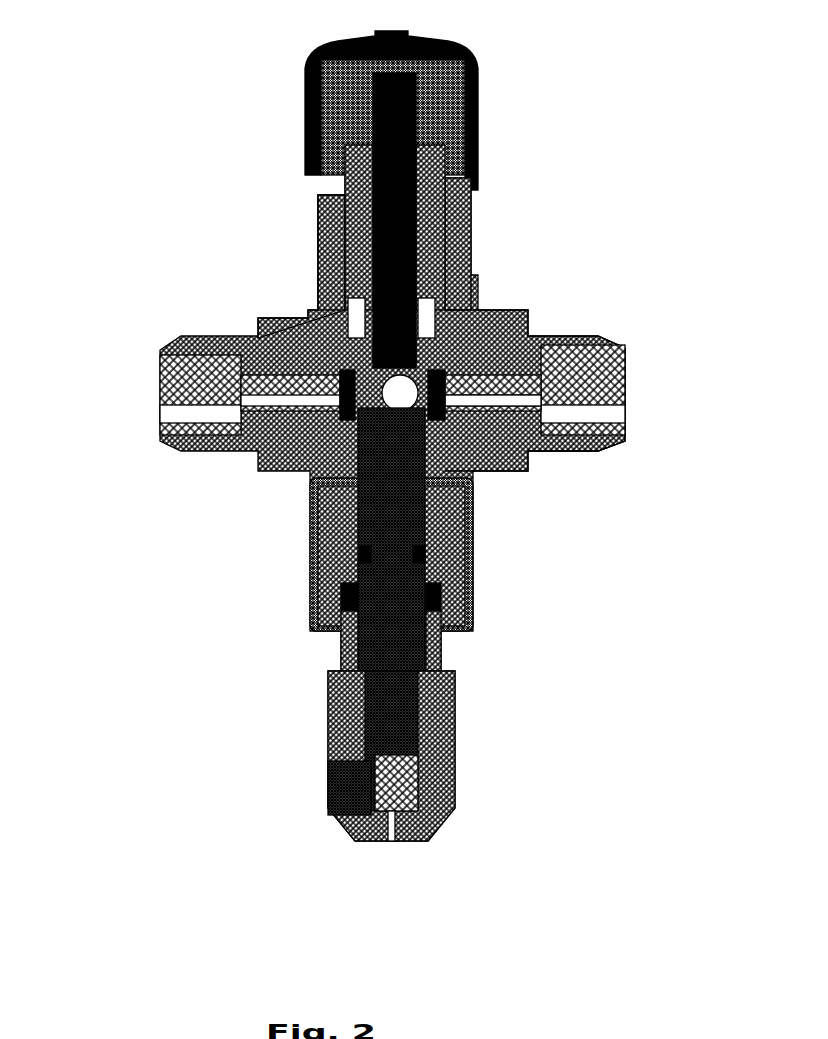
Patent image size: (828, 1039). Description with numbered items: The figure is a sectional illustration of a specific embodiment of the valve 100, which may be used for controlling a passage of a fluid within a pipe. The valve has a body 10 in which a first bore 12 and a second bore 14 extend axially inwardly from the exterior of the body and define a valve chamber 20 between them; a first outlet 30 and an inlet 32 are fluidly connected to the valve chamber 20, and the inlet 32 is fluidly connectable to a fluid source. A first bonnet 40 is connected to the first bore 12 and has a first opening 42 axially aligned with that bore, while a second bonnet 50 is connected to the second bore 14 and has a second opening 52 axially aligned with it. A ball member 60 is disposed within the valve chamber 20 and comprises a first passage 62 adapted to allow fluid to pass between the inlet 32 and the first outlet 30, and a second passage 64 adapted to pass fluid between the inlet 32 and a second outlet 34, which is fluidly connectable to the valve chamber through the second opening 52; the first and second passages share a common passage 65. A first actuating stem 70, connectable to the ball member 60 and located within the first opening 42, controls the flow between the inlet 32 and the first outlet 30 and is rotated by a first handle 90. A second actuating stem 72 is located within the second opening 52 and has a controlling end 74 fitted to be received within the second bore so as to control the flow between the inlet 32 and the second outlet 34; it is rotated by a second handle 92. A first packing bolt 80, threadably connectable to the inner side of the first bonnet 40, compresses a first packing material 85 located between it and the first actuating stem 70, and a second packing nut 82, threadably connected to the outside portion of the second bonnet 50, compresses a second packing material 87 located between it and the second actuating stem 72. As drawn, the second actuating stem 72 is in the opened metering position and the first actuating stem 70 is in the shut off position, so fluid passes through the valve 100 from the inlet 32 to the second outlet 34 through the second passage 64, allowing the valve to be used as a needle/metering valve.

The valve 100 is at (197, 112).
The first handle 90 is at (470, 62).
The first actuating stem 70 is at (400, 152).
The first packing bolt 80 is at (432, 208).
The first bonnet 40 is at (452, 234).
The first opening 42 is at (437, 287).
The first packing material 85 is at (313, 282).
The first outlet 30 is at (272, 372).
The body 10 is at (500, 305).
The first bore 12 is at (437, 352).
The inlet 32 is at (550, 350).
The second outlet 34 is at (278, 440).
The common passage 65 is at (400, 355).
The second bore 14 is at (445, 440).
The valve chamber 20 is at (437, 418).
The controlling end 74 is at (405, 424).
The ball member 60 is at (343, 413).
The first passage 62 is at (373, 400).
The second passage 64 is at (400, 443).
The second bonnet 50 is at (447, 517).
The second opening 52 is at (435, 562).
The second packing nut 82 is at (462, 607).
The second actuating stem 72 is at (390, 683).
The second packing material 87 is at (340, 615).
The second handle 92 is at (440, 800).